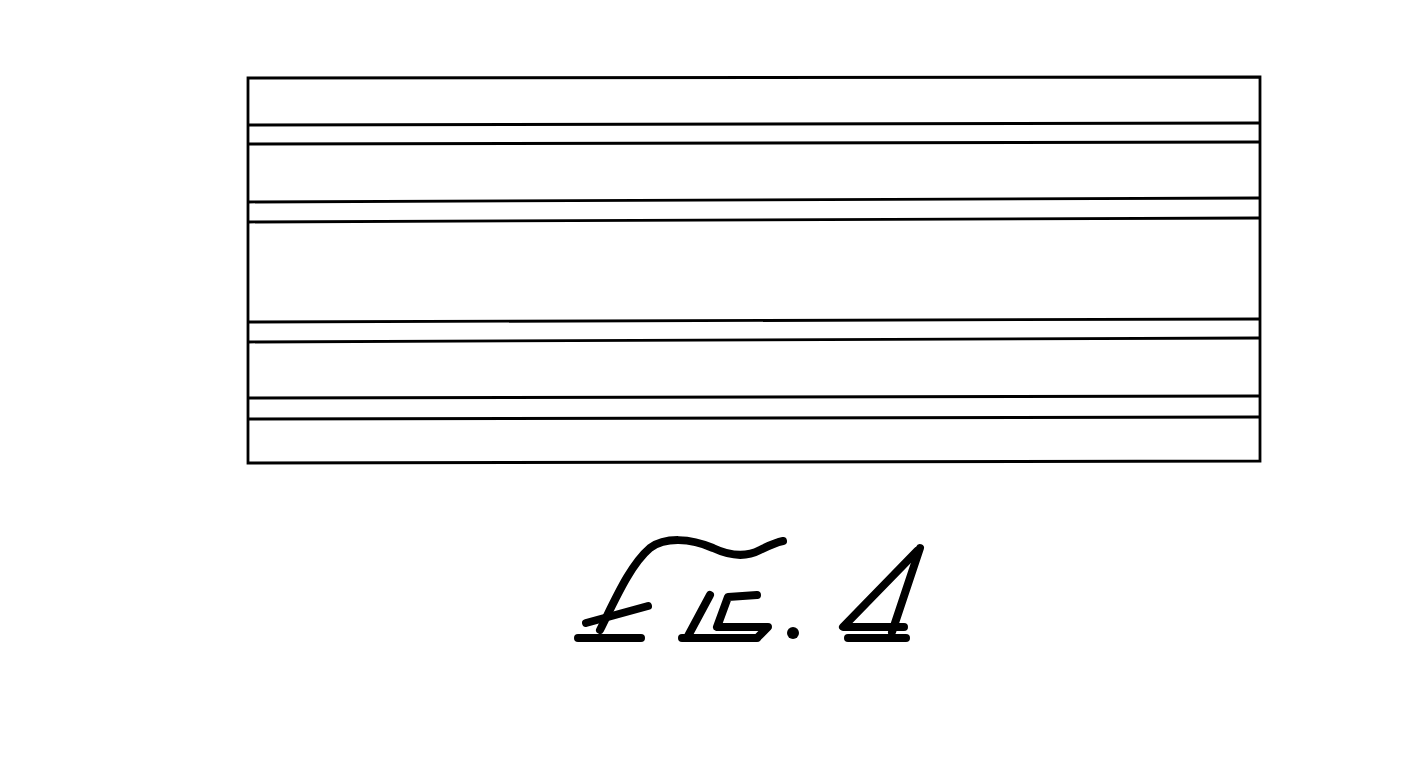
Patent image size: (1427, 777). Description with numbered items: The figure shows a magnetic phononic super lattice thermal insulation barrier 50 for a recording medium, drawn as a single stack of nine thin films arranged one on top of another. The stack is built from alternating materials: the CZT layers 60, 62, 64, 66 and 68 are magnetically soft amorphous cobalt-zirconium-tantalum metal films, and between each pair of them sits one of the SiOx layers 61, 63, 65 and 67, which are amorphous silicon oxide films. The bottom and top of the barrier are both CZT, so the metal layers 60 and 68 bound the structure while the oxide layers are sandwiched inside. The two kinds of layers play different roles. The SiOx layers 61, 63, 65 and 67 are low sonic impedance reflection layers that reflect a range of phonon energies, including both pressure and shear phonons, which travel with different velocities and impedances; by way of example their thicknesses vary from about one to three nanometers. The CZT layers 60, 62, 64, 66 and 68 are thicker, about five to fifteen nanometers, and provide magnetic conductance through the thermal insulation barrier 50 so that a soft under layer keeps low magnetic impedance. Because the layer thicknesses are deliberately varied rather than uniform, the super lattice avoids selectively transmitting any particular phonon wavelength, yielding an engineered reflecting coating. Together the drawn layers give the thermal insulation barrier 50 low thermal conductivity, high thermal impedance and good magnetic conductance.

The thermal insulation barrier 50 is at (232, 197).
The CZT layer 60 is at (1282, 439).
The SiOx layer 61 is at (1282, 403).
The CZT layer 62 is at (1282, 357).
The SiOx layer 63 is at (1282, 325).
The CZT layer 64 is at (1282, 264).
The SiOx layer 65 is at (1282, 205).
The CZT layer 66 is at (1282, 165).
The SiOx layer 67 is at (1282, 126).
The CZT layer 68 is at (1282, 92).